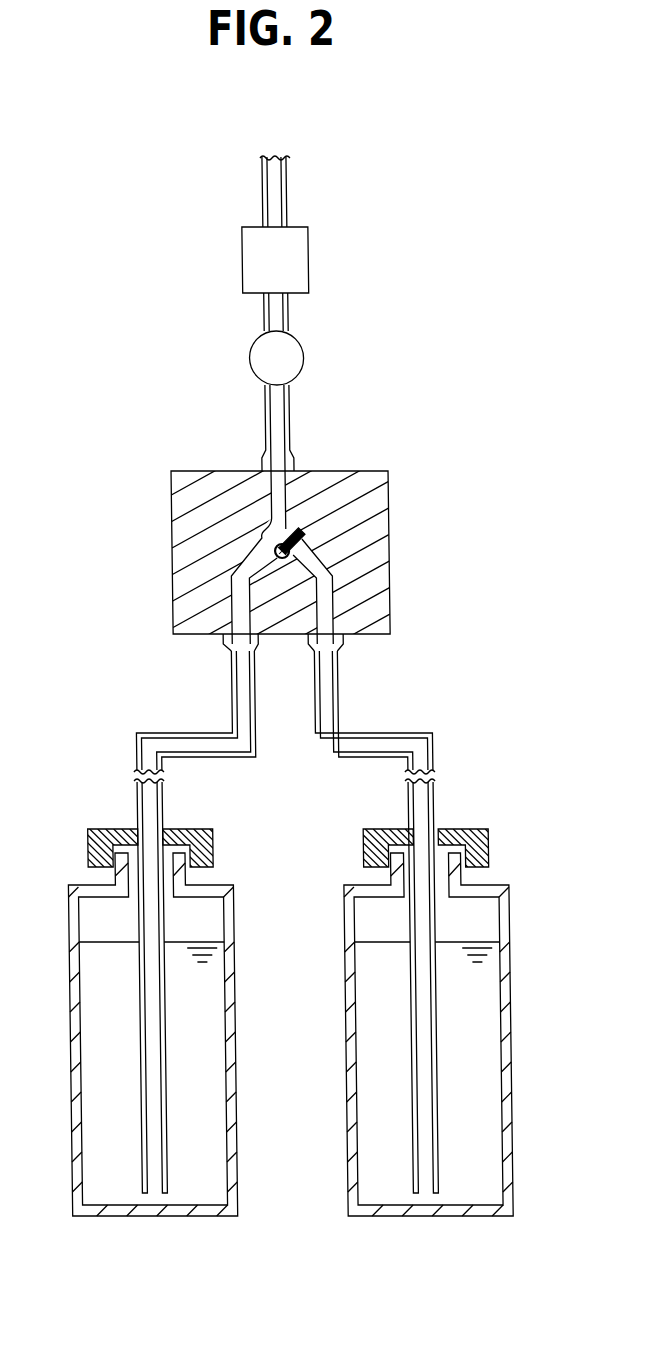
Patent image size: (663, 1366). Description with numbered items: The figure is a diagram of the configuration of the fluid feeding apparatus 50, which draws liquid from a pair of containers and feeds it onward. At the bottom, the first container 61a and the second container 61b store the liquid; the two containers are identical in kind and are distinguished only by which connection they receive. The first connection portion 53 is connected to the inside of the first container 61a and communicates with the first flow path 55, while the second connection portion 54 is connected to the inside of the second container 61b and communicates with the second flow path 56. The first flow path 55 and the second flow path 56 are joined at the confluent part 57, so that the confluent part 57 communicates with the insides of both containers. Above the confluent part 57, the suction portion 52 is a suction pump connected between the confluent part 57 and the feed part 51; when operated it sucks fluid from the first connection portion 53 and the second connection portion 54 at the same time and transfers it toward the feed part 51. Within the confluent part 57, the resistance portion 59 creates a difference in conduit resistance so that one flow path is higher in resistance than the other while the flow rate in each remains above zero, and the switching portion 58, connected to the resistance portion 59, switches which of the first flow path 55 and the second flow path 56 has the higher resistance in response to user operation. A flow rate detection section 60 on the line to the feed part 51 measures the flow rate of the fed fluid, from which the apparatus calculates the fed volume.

The fluid feeding apparatus 50 is at (125, 397).
The feed part 51 is at (294, 194).
The flow rate detection section 60 is at (314, 254).
The suction portion 52 is at (307, 350).
The confluent part 57 is at (268, 532).
The resistance portion 59 is at (300, 557).
The switching portion 58 is at (287, 560).
The first flow path 55 is at (172, 732).
The second flow path 56 is at (398, 732).
The first connection portion 53 is at (121, 829).
The second connection portion 54 is at (451, 829).
The first container 61a is at (231, 1172).
The second container 61b is at (342, 1180).